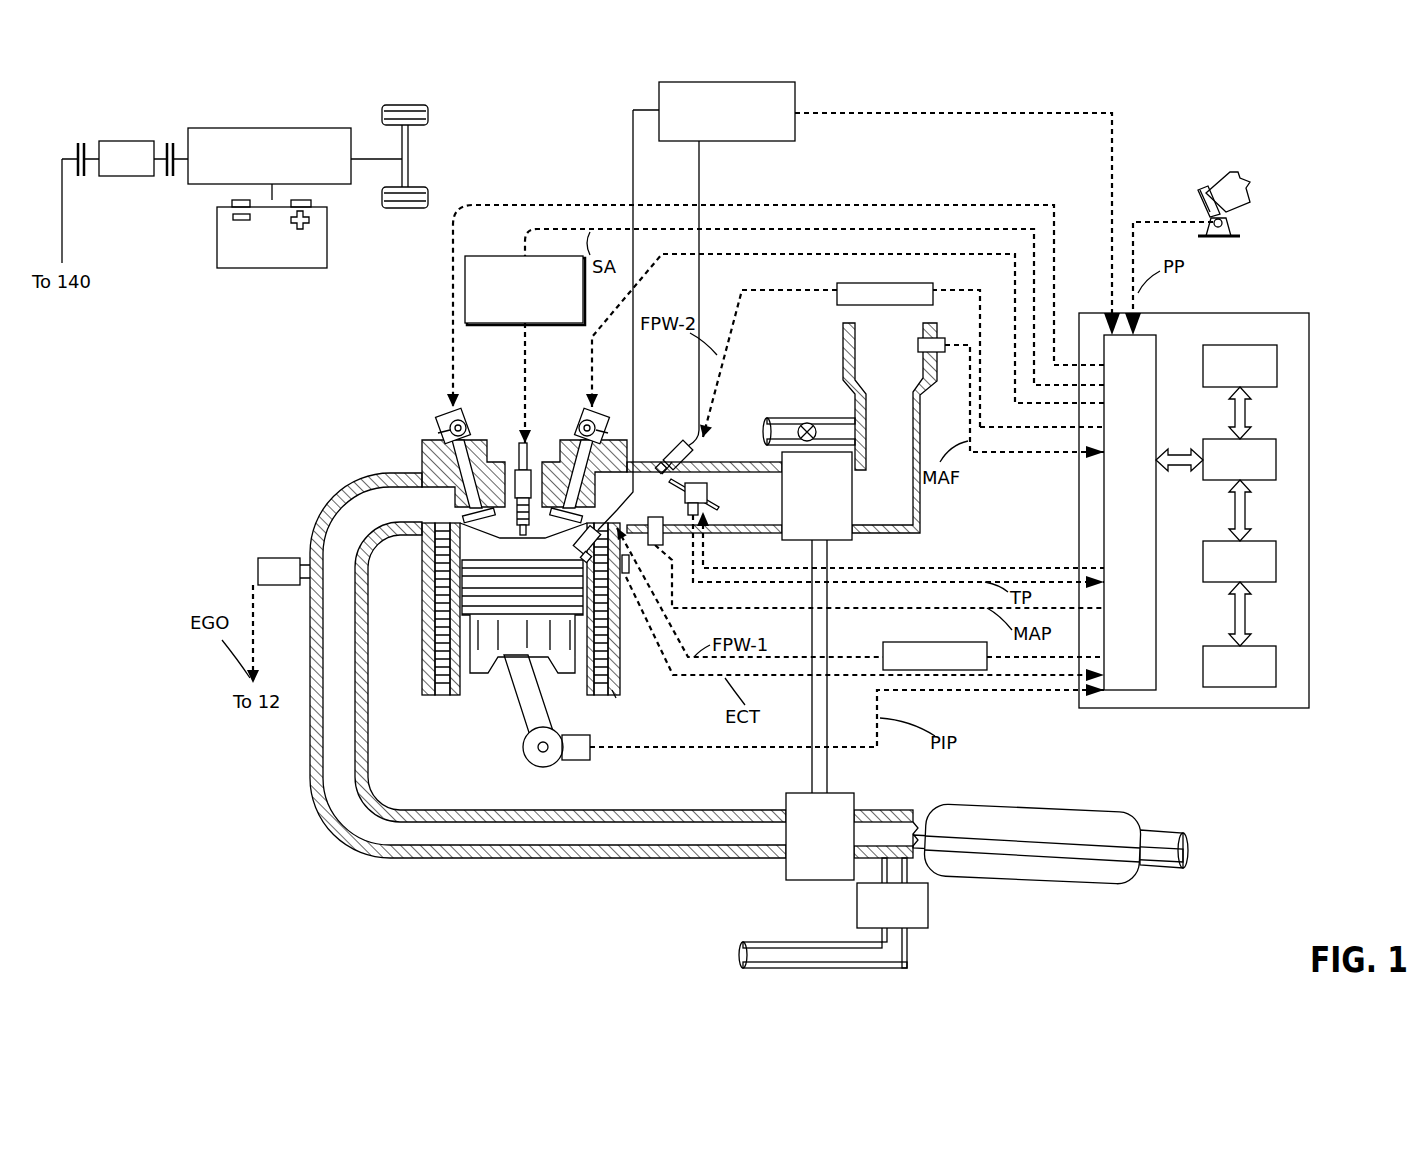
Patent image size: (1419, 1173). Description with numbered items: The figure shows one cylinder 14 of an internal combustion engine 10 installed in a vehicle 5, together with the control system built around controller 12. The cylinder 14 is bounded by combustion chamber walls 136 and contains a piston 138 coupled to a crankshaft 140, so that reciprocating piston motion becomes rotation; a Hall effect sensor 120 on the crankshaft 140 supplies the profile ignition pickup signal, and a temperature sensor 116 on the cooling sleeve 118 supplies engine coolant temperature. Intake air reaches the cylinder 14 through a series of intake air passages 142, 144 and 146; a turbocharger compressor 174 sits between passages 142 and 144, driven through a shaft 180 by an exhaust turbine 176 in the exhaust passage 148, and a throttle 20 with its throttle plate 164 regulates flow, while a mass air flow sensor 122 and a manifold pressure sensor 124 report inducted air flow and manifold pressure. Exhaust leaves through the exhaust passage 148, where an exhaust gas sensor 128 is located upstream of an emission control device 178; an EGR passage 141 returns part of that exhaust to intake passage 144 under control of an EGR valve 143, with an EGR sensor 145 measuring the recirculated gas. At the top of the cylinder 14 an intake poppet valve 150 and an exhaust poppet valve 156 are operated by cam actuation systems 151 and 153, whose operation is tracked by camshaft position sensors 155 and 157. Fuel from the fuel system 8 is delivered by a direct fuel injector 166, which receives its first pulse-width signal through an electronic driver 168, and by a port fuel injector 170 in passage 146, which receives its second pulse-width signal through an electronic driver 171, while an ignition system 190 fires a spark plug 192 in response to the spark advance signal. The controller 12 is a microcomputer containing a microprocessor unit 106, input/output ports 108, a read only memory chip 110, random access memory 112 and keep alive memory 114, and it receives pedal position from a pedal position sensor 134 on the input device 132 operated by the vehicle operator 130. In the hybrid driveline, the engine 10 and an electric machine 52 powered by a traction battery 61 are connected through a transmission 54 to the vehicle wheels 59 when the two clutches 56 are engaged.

The vehicle 5 is at (417, 170).
The fuel system 8 is at (859, 306).
The internal combustion engine 10 is at (350, 400).
The controller 12 is at (1233, 497).
The cylinder 14 is at (499, 636).
The throttle 20 is at (705, 485).
The electric machine 52 is at (125, 176).
The transmission 54 is at (325, 184).
The clutch 56 is at (77, 148).
The vehicle wheels 59 is at (407, 208).
The traction battery 61 is at (265, 268).
The microprocessor unit 106 is at (1276, 455).
The input/output ports 108 is at (1156, 345).
The read only memory chip 110 is at (1277, 366).
The random access memory 112 is at (1276, 560).
The keep alive memory 114 is at (1276, 665).
The temperature sensor 116 is at (628, 577).
The cooling sleeve 118 is at (612, 693).
The Hall effect sensor 120 is at (578, 765).
The mass air flow sensor 122 is at (935, 338).
The manifold absolute pressure sensor 124 is at (672, 577).
The exhaust gas sensor 128 is at (258, 565).
The vehicle operator 130 is at (1250, 190).
The input device 132 is at (1200, 200).
The pedal position sensor 134 is at (1240, 226).
The combustion chamber walls 136 is at (466, 700).
The piston 138 is at (505, 645).
The crankshaft 140 is at (535, 763).
The EGR passage 141 is at (795, 420).
The intake air passage 142 is at (890, 428).
The EGR valve 143 is at (812, 424).
The intake air passage 144 is at (704, 497).
The EGR sensor 145 is at (928, 918).
The intake air passage 146 is at (655, 499).
The exhaust passage 148 is at (548, 665).
The intake poppet valve 150 is at (560, 505).
The cam actuation system 151 is at (587, 415).
The cam actuation system 153 is at (467, 415).
The camshaft position sensor 155 is at (603, 430).
The exhaust poppet valve 156 is at (468, 500).
The camshaft position sensor 157 is at (445, 428).
The throttle plate 164 is at (662, 471).
The fuel injector 166 is at (597, 531).
The electronic driver 168 is at (886, 642).
The fuel injector 170 is at (682, 446).
The electronic driver 171 is at (837, 289).
The compressor 174 is at (850, 540).
The exhaust turbine 176 is at (786, 873).
The emission control device 178 is at (1025, 808).
The shaft 180 is at (827, 757).
The ignition system 190 is at (482, 256).
The spark plug 192 is at (520, 460).